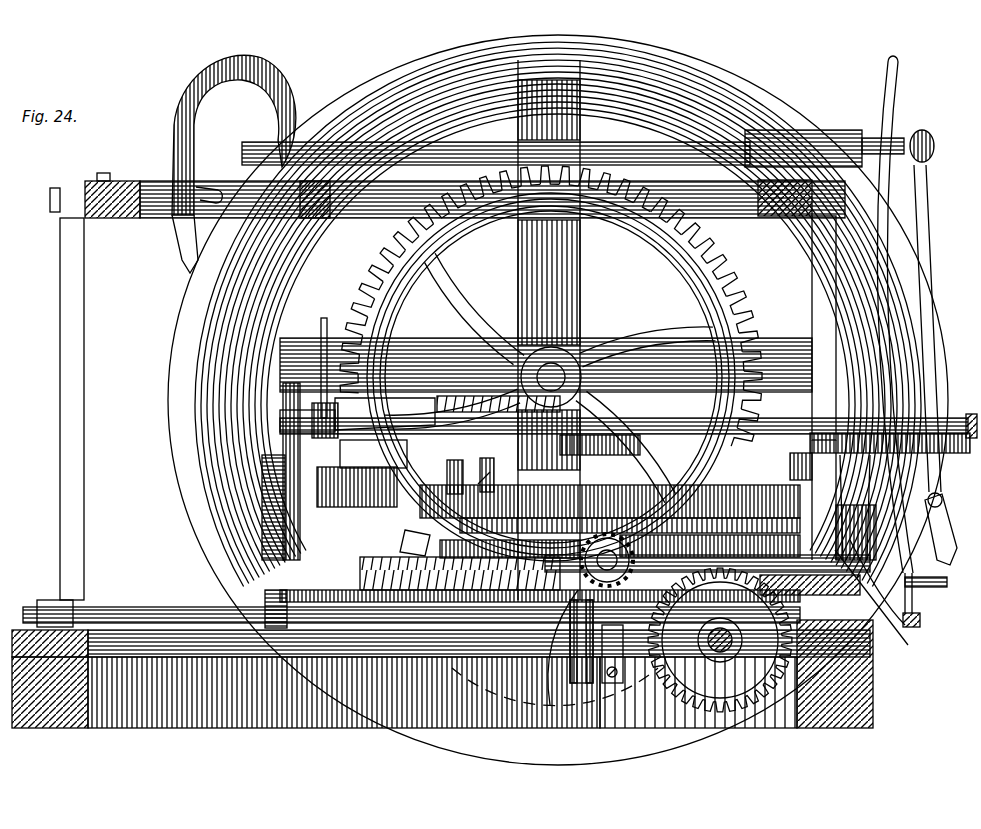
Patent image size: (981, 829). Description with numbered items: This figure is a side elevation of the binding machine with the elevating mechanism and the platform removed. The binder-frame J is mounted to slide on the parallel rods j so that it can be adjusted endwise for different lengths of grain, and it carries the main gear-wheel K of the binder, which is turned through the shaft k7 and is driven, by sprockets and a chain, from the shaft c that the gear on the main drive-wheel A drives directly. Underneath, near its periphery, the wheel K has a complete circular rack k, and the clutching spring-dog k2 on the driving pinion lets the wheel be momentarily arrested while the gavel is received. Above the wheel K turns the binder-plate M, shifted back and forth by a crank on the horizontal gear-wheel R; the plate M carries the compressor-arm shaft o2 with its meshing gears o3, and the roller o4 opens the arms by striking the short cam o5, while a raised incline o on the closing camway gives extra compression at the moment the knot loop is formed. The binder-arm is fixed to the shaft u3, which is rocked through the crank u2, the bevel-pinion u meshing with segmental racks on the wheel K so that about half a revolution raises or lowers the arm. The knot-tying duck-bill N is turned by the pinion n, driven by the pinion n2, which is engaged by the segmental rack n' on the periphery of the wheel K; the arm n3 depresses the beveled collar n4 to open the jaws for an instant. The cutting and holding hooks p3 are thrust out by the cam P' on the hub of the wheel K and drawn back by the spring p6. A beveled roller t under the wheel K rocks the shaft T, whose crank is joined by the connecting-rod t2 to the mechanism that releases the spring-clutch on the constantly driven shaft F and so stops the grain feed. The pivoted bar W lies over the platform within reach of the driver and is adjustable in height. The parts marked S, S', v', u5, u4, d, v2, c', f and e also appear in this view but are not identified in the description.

The main drive-wheel A is at (930, 350).
The cylinder shaft S is at (546, 352).
The segmental rack n' is at (551, 330).
The binder-arm shaft u3 is at (468, 148).
The pivoted bar W is at (312, 222).
The hook v' is at (234, 135).
The hook finger u5 is at (212, 188).
The hook tip u4 is at (185, 245).
The crank u2 is at (915, 130).
The bevel-pinion u is at (948, 536).
The upright rod S' is at (324, 368).
The incline o is at (336, 400).
The duck-bill N is at (291, 464).
The pinion n is at (258, 507).
The gears o3 is at (307, 421).
The compressor-arm shaft o2 is at (385, 414).
The spring p6 is at (462, 396).
The hooks p3 is at (398, 398).
The shaft F is at (973, 433).
The pinion n2 is at (368, 474).
The arm n3 is at (345, 506).
The friction-roller o4 is at (449, 469).
The cam o5 is at (482, 465).
The pin d is at (476, 481).
The main gear-wheel K is at (610, 503).
The cam P' is at (765, 444).
The binder-plate M is at (795, 459).
The horizontal gear-wheel R is at (844, 500).
The shaft v2 is at (860, 580).
The beveled collar n4 is at (372, 568).
The circular rack k is at (410, 547).
The beveled roller t is at (601, 560).
The parallel rods j is at (128, 612).
The binder-frame J is at (262, 592).
The rock-shaft T is at (886, 597).
The connecting-rod t2 is at (919, 600).
The shaft c is at (720, 640).
The shaft k7 is at (728, 624).
The hub c' is at (720, 658).
The pulley f is at (583, 684).
The block e is at (624, 676).
The clutching spring-dog k2 is at (555, 648).